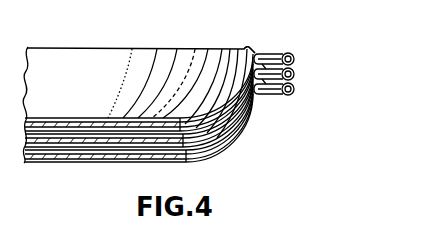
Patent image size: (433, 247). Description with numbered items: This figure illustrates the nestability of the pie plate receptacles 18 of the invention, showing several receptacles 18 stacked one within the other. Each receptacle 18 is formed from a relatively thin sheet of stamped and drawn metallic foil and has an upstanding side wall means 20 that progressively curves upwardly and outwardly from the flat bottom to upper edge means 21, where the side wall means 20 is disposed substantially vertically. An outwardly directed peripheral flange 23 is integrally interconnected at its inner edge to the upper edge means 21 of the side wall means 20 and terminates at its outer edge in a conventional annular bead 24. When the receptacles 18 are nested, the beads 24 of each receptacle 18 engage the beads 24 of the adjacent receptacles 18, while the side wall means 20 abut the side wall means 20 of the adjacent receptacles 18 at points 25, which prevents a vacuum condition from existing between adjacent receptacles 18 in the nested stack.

The pie plate receptacle 18 is at (105, 36).
The side wall means 20 is at (236, 90).
The upper edge means 21 is at (247, 50).
The peripheral flange 23 is at (268, 52).
The annular bead 24 is at (296, 58).
The points 25 is at (237, 70).